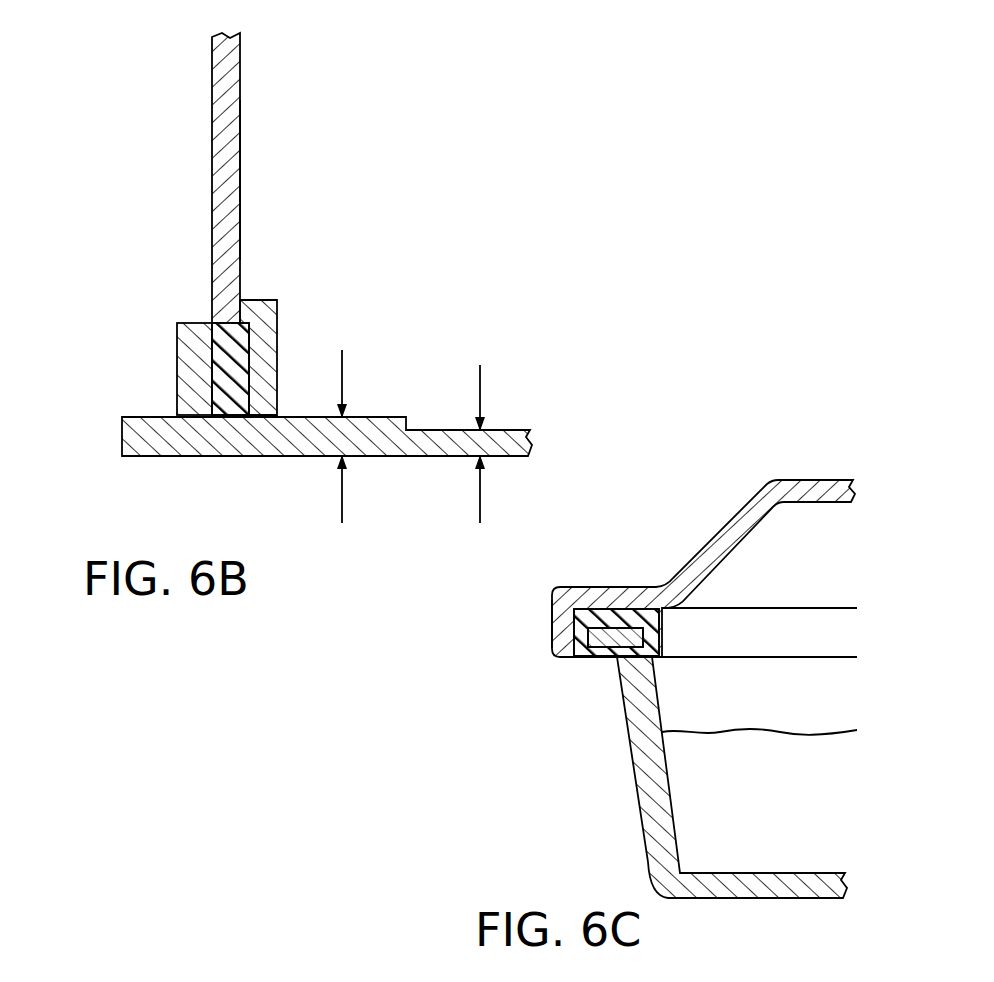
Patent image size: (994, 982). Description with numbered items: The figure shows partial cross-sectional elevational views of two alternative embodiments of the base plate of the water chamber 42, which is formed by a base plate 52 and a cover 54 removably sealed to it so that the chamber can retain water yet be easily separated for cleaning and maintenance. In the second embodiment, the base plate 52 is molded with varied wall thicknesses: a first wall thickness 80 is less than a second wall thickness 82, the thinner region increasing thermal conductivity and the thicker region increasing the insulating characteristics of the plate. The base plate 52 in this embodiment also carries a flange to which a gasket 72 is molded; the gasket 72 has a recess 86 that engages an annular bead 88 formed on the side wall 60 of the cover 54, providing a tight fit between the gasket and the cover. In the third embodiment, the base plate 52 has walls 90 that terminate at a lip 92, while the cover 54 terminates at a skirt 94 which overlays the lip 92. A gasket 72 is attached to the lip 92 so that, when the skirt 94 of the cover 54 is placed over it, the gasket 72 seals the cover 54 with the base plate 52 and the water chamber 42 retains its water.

In FIG. 6B, the water chamber 42 is at (177, 137).
In FIG. 6C, the water chamber 42 is at (688, 502).
In FIG. 6B, the cover 54 is at (240, 70).
In FIG. 6C, the cover 54 is at (803, 480).
In FIG. 6B, the side wall 60 is at (240, 175).
In FIG. 6B, the gasket 72 is at (210, 358).
In FIG. 6C, the gasket 72 is at (586, 625).
In FIG. 6B, the recess 86 is at (240, 372).
In FIG. 6B, the annular bead 88 is at (222, 388).
In FIG. 6B, the second wall thickness 82 is at (342, 493).
In FIG. 6B, the first wall thickness 80 is at (480, 495).
In FIG. 6C, the walls 90 is at (638, 787).
In FIG. 6C, the base plate 52 is at (772, 873).
In FIG. 6C, the lip 92 is at (614, 648).
In FIG. 6C, the skirt 94 is at (557, 633).